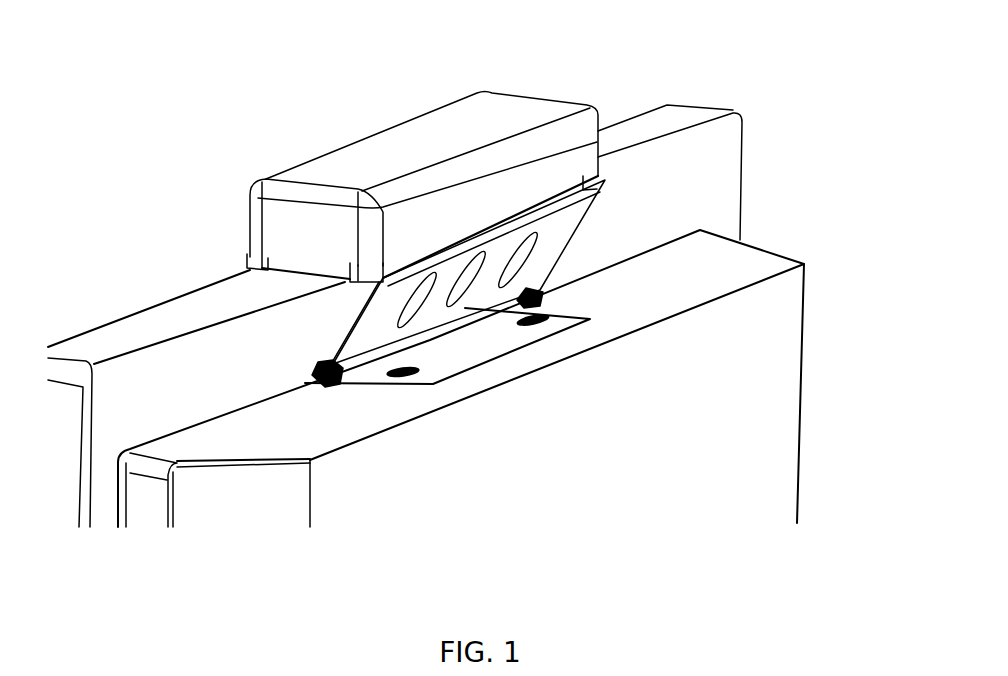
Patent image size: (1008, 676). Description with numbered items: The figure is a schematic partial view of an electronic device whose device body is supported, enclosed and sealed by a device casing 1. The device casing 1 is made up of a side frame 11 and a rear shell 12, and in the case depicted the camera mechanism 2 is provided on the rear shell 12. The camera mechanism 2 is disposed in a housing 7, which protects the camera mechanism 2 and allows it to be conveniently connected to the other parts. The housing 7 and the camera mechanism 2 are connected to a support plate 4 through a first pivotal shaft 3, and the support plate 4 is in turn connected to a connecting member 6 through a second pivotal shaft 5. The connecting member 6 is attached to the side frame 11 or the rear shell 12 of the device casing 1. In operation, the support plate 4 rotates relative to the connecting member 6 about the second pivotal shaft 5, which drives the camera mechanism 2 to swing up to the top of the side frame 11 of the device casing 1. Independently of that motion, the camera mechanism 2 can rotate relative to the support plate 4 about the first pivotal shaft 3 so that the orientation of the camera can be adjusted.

The device casing 1 is at (466, 273).
The side frame 11 is at (657, 127).
The rear shell 12 is at (752, 483).
The camera mechanism 2 is at (443, 127).
The first pivotal shaft 3 is at (522, 205).
The support plate 4 is at (529, 297).
The second pivotal shaft 5 is at (362, 358).
The connecting member 6 is at (463, 352).
The housing 7 is at (337, 167).